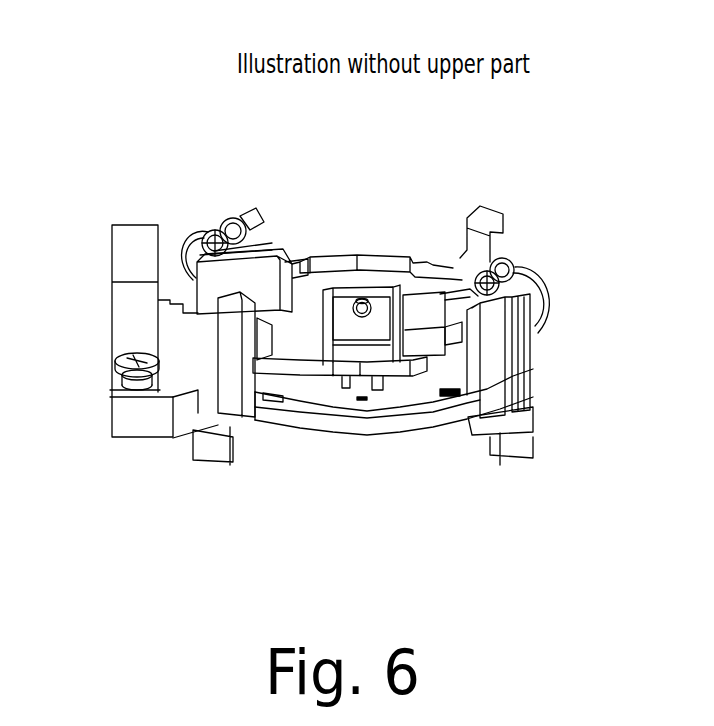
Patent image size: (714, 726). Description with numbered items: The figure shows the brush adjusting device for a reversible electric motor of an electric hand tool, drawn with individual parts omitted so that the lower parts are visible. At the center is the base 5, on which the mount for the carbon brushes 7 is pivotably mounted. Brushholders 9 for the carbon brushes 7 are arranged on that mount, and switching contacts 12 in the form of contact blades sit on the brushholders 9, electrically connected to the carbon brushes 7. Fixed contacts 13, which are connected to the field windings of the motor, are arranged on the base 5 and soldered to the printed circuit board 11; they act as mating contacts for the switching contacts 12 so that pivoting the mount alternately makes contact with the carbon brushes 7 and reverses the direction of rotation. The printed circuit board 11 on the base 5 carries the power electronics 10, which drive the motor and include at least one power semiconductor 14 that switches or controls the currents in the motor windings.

The base 5 is at (303, 406).
The carbon brushes 7 is at (287, 297).
The brushholders 9 is at (528, 322).
The power electronics 10 is at (340, 315).
The printed circuit board 11 is at (413, 383).
The switching contacts 12 is at (247, 288).
The fixed contacts 13 is at (455, 290).
The power semiconductor 14 is at (357, 345).